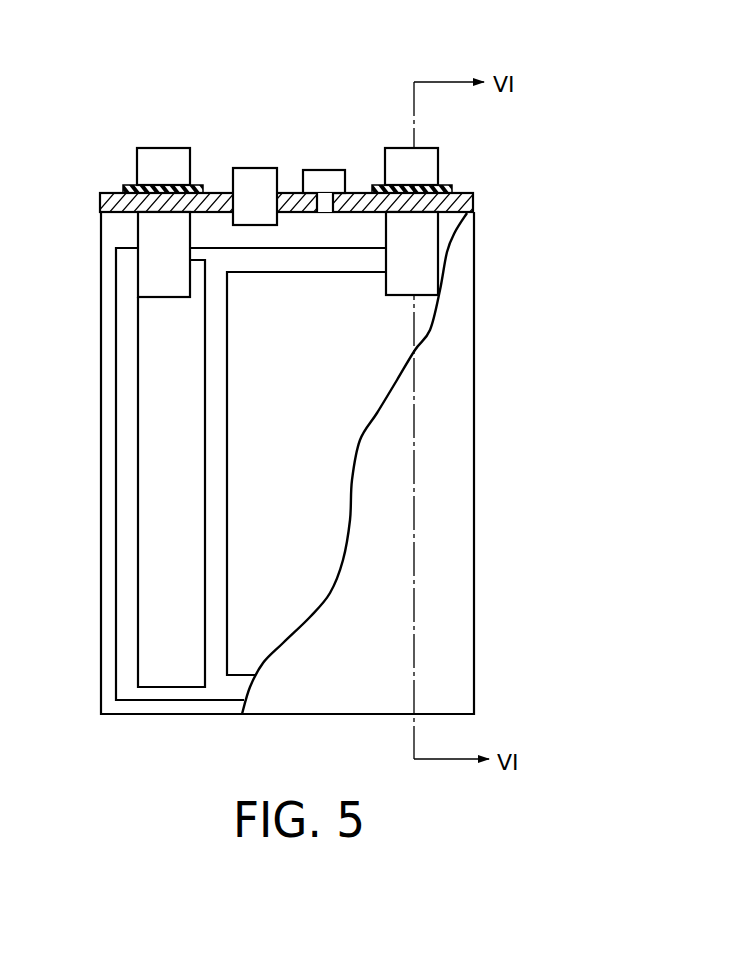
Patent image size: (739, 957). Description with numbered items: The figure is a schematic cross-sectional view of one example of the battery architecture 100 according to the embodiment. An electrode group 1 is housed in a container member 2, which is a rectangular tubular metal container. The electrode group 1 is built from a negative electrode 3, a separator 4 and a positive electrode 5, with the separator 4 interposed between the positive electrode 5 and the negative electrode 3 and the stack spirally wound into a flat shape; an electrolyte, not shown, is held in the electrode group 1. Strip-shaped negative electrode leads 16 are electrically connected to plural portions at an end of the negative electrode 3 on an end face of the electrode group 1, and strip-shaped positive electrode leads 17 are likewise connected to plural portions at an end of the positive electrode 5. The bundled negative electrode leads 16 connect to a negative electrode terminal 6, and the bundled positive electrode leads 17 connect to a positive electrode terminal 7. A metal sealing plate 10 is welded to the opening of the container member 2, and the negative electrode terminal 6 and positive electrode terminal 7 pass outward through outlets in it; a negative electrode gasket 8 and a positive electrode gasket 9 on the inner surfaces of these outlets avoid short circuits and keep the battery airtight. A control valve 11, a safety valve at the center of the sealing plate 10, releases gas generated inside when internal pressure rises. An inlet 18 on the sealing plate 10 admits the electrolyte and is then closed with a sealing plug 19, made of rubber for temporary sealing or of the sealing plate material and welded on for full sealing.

The battery architecture 100 is at (524, 143).
The electrode group 1 is at (216, 414).
The container member 2 is at (462, 552).
The negative electrode 3 is at (257, 342).
The separator 4 is at (213, 538).
The positive electrode 5 is at (150, 433).
The negative electrode terminal 6 is at (397, 157).
The positive electrode terminal 7 is at (158, 158).
The negative electrode gasket 8 is at (442, 187).
The positive electrode gasket 9 is at (192, 185).
The sealing plate 10 is at (118, 192).
The control valve 11 is at (255, 182).
The negative electrode lead 16 is at (428, 242).
The positive electrode lead 17 is at (143, 232).
The inlet 18 is at (340, 190).
The sealing plug 19 is at (308, 173).